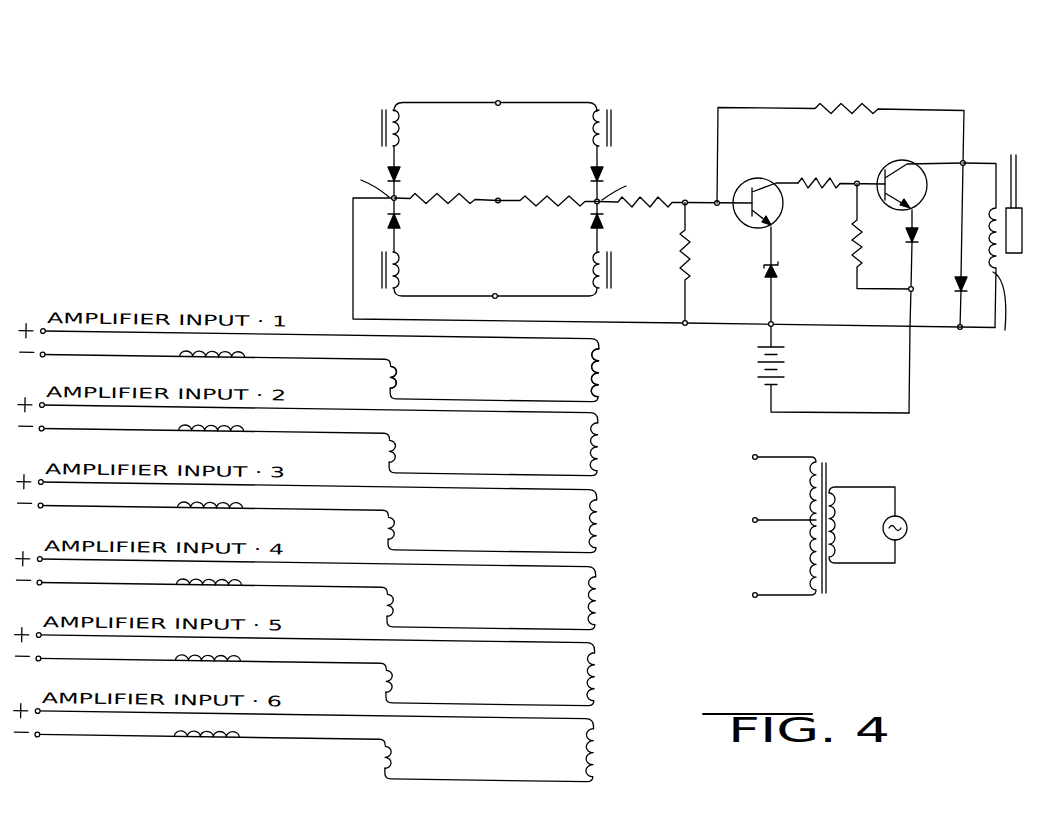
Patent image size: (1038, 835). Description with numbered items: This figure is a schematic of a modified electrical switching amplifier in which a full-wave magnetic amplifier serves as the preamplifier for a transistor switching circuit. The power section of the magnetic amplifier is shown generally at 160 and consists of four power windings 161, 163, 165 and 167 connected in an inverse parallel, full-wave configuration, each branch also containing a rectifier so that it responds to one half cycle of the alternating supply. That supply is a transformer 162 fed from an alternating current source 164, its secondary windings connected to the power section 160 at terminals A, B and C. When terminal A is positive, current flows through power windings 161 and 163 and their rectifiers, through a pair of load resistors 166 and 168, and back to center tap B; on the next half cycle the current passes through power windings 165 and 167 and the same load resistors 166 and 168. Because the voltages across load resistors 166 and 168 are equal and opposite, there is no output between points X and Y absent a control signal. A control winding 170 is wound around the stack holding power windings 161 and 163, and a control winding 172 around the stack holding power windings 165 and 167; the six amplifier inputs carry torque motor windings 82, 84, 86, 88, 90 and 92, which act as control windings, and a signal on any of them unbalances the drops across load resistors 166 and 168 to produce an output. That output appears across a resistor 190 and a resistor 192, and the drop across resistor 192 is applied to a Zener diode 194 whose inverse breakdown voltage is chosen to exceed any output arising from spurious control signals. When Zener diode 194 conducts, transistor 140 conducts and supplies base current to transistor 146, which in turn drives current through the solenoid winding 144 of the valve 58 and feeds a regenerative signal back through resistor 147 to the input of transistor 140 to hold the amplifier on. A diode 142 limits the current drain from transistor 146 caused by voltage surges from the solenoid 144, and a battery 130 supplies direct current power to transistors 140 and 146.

The torque motor winding 82 is at (251, 356).
The torque motor winding 84 is at (245, 434).
The torque motor winding 86 is at (248, 510).
The torque motor winding 88 is at (242, 587).
The torque motor winding 90 is at (236, 663).
The torque motor winding 92 is at (237, 740).
The battery 130 is at (788, 373).
The transistor 140 is at (742, 180).
The diode 142 is at (960, 292).
The solenoid winding 144 is at (989, 259).
The transistor 146 is at (885, 166).
The resistor 147 is at (840, 108).
The magnetic amplifier power section 160 is at (485, 103).
The power winding 161 is at (403, 137).
The transformer 162 is at (828, 583).
The power winding 163 is at (594, 130).
The alternating current source 164 is at (907, 520).
The power winding 165 is at (405, 268).
The load resistor 166 is at (440, 202).
The power winding 167 is at (593, 274).
The load resistor 168 is at (532, 200).
The control winding 170 is at (400, 368).
The control winding 172 is at (602, 365).
The resistor 190 is at (664, 200).
The resistor 192 is at (691, 261).
The Zener diode 194 is at (775, 272).
The valve 58 is at (1018, 155).